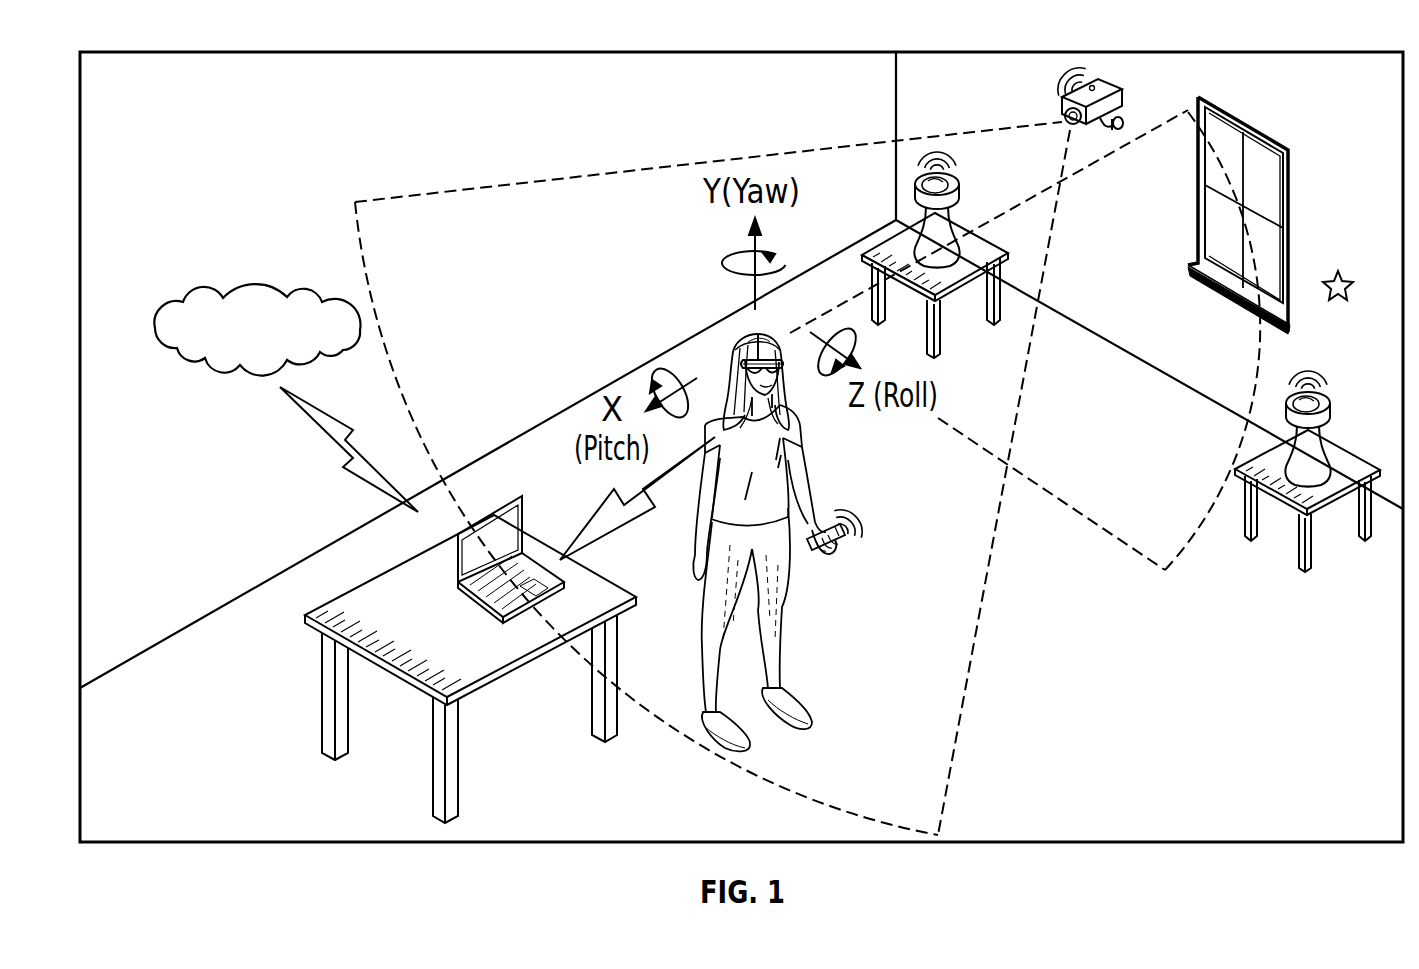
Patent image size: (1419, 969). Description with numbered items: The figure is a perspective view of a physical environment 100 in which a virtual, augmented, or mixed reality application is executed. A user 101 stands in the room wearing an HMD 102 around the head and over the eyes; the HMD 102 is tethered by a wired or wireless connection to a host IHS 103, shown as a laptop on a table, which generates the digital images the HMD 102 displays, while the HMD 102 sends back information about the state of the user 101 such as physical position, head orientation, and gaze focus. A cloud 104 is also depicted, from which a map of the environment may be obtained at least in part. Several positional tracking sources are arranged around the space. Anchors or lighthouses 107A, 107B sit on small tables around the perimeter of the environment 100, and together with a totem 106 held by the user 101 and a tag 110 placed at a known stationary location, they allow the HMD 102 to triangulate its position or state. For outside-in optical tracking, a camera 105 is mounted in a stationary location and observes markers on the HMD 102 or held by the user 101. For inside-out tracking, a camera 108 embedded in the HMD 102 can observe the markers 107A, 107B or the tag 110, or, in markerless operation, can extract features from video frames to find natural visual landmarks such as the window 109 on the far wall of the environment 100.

The physical environment 100 is at (150, 52).
The user 101 is at (783, 608).
The HMD 102 is at (788, 378).
The host IHS 103 is at (455, 551).
The cloud 104 is at (177, 302).
The camera 105 is at (1118, 97).
The totem 106 is at (836, 540).
The anchor or lighthouse 107A is at (958, 190).
The anchor or lighthouse 107B is at (1330, 402).
The camera 108 is at (770, 336).
The window 109 is at (1292, 176).
The tag 110 is at (1346, 275).